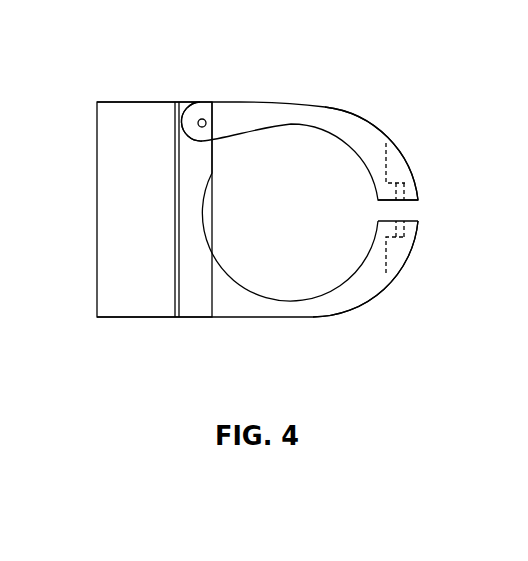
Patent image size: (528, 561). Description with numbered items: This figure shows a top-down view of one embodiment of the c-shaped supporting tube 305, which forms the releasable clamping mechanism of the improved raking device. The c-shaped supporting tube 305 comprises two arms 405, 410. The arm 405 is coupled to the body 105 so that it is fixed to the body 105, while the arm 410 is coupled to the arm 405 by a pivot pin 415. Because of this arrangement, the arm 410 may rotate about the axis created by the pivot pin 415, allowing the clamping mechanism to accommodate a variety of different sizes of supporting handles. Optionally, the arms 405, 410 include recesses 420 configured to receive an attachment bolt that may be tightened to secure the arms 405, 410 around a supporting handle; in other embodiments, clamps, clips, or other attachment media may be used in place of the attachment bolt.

The body 105 is at (138, 120).
The c-shaped supporting tube 305 is at (285, 130).
The arm 405 is at (333, 318).
The arm 410 is at (312, 102).
The pivot pin 415 is at (199, 120).
The recesses 420 is at (396, 170).